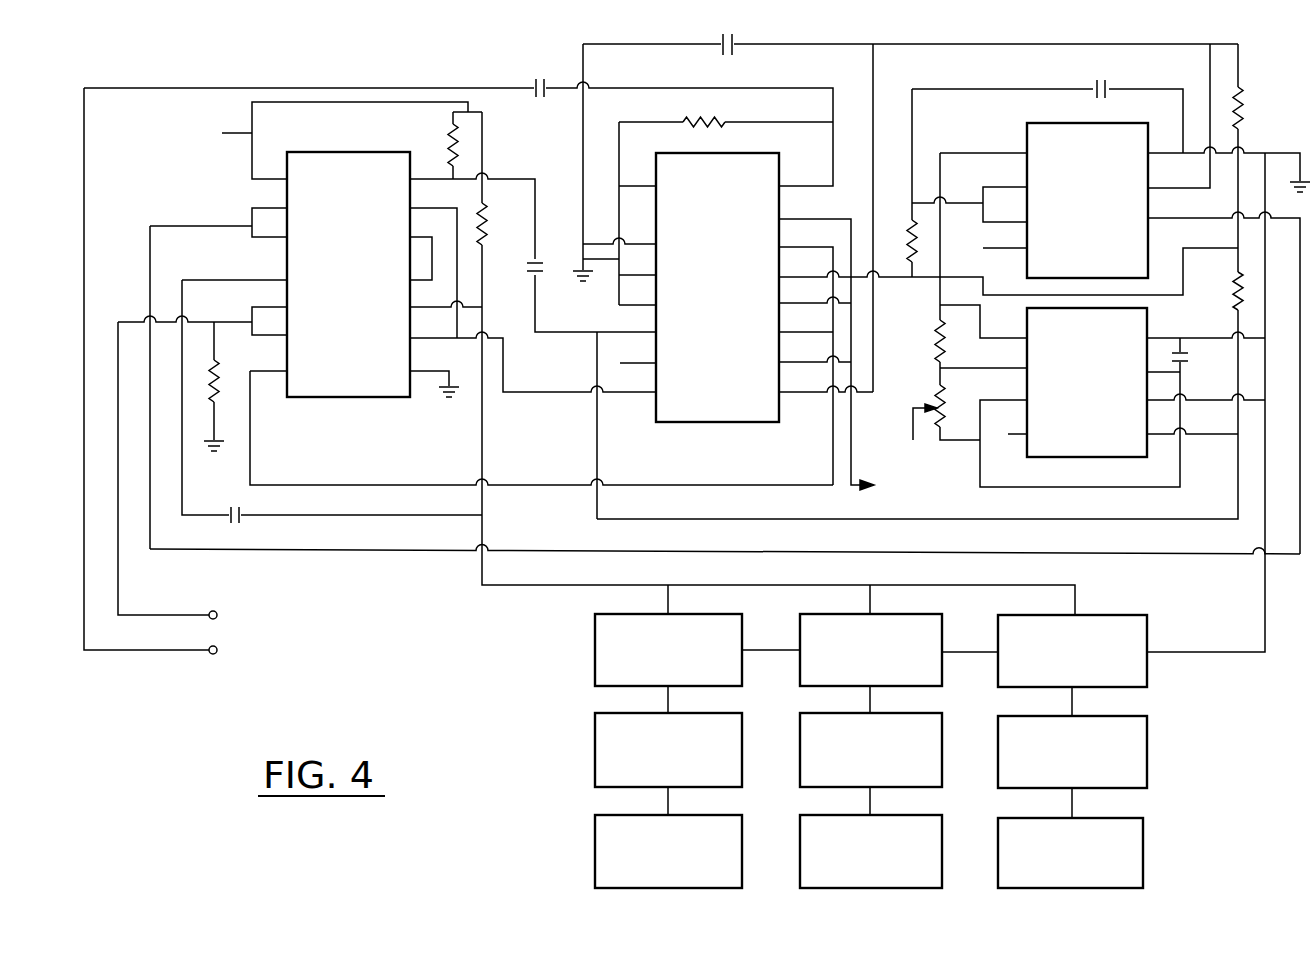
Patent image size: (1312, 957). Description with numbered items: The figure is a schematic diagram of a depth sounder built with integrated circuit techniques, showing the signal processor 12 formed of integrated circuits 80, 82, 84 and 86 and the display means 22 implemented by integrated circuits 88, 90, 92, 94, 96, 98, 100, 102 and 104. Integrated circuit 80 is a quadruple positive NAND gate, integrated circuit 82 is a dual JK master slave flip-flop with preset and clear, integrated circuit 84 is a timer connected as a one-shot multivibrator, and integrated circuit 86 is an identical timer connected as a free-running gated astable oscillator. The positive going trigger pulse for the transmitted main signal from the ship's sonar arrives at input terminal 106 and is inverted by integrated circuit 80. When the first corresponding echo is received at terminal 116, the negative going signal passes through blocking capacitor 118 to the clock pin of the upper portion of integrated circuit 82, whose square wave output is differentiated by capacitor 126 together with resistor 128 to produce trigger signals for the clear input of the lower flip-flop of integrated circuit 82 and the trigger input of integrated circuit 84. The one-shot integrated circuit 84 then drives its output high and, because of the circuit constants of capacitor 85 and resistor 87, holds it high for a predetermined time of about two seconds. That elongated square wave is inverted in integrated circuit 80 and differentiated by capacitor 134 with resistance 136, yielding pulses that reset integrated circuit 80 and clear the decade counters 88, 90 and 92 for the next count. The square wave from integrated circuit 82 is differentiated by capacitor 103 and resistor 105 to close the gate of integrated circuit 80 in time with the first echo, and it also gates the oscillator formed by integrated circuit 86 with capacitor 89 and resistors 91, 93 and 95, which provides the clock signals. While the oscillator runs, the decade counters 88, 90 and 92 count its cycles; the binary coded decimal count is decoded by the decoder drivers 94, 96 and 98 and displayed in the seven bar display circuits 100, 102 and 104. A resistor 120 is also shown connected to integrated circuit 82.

The signal processor 12 is at (397, 660).
The display means 22 is at (860, 748).
The integrated circuit 80 is at (338, 398).
The integrated circuit 82 is at (712, 423).
The integrated circuit 84 is at (1108, 122).
The capacitor 85 is at (1097, 85).
The integrated circuit 86 is at (1097, 457).
The resistor 87 is at (913, 232).
The decade counter 88 is at (595, 626).
The capacitor 89 is at (1188, 360).
The decade counter 90 is at (800, 632).
The resistor 91 is at (1234, 286).
The decade counter 92 is at (998, 632).
The resistor 93 is at (940, 330).
The decoder driver 94 is at (595, 724).
The resistor 95 is at (937, 396).
The decoder driver 96 is at (800, 744).
The decoder driver 98 is at (998, 746).
The digital display circuit 100 is at (595, 835).
The digital display circuit 102 is at (800, 856).
The capacitor 103 is at (542, 275).
The digital display circuit 104 is at (998, 856).
The resistor 105 is at (450, 140).
The input terminal 106 is at (209, 612).
The terminal 116 is at (209, 648).
The blocking capacitor 118 is at (534, 82).
The resistor 120 is at (721, 118).
The capacitor 126 is at (720, 47).
The resistor 128 is at (1240, 92).
The capacitor 134 is at (241, 519).
The resistance 136 is at (484, 204).